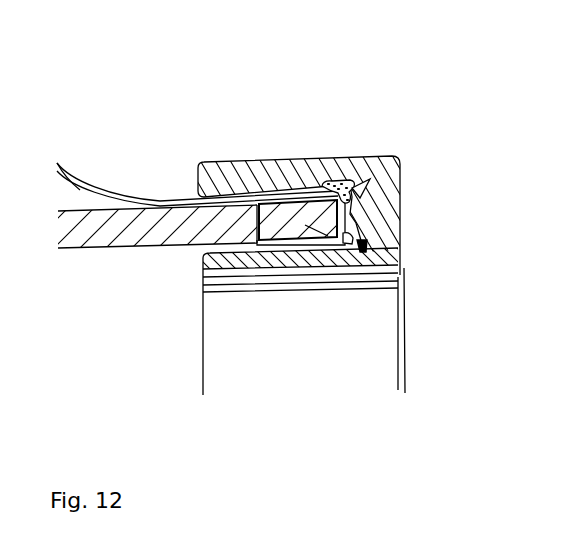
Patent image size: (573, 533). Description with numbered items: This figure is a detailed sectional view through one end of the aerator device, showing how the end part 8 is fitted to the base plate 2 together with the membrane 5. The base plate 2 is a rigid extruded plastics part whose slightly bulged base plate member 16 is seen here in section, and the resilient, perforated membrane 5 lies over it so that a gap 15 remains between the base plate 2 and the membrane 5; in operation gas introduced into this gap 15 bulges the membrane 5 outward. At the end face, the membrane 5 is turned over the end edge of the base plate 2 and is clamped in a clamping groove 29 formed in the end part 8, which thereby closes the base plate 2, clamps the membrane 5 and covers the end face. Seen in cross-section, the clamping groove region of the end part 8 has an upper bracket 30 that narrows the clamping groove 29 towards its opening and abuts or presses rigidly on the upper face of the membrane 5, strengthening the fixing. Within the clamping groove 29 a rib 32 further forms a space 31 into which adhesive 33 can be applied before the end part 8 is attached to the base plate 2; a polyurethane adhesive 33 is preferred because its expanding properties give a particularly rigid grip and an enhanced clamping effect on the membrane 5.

The base plate 2 is at (400, 262).
The membrane 5 is at (113, 193).
The end part 8 is at (323, 359).
The gap 15 is at (70, 192).
The base plate member 16 is at (138, 220).
The clamping groove 29 is at (300, 192).
The upper bracket 30 is at (208, 173).
The space 31 is at (353, 188).
The rib 32 is at (360, 218).
The adhesive 33 is at (340, 185).